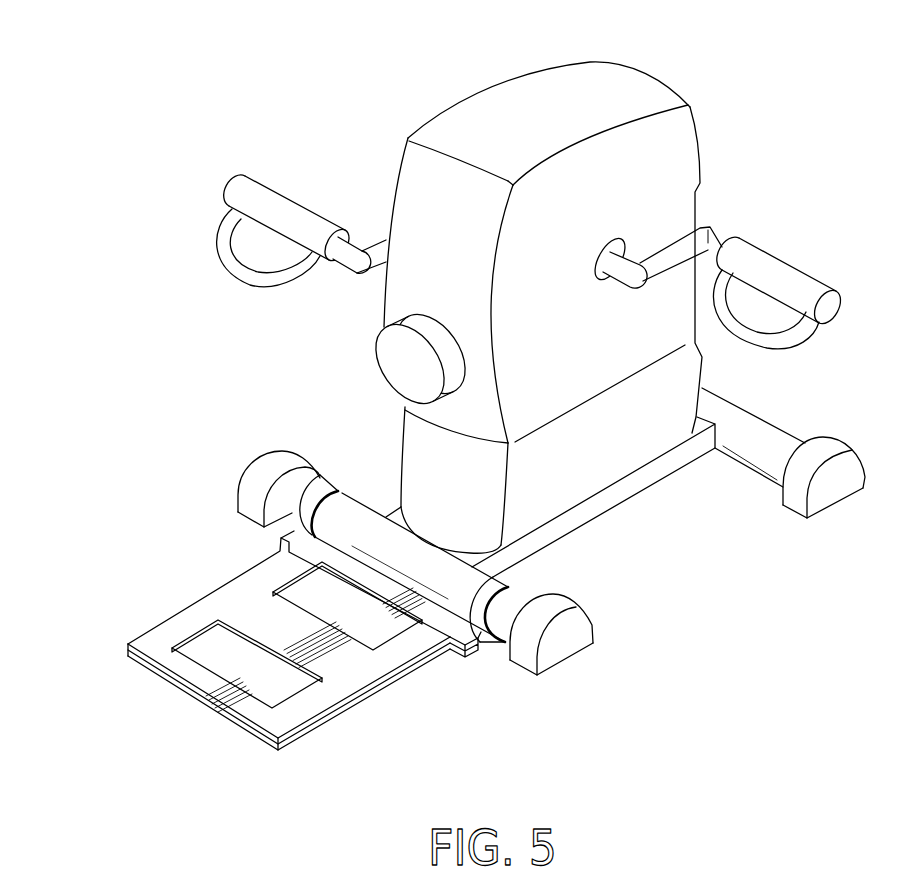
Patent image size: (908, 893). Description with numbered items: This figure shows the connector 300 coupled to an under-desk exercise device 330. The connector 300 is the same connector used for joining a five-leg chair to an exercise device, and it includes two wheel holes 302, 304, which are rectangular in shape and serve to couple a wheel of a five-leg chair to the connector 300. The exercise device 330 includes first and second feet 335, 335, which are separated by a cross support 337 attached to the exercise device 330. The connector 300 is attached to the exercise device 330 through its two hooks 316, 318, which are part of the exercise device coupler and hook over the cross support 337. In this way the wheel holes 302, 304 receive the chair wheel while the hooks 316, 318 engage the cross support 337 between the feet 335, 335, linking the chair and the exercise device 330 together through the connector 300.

The connector 300 is at (496, 596).
The wheel hole 302 is at (287, 690).
The wheel hole 304 is at (383, 632).
The hook 316 is at (478, 643).
The hook 318 is at (330, 492).
The under-desk exercise device 330 is at (712, 108).
The foot 335 is at (272, 457).
The cross support 337 is at (502, 623).